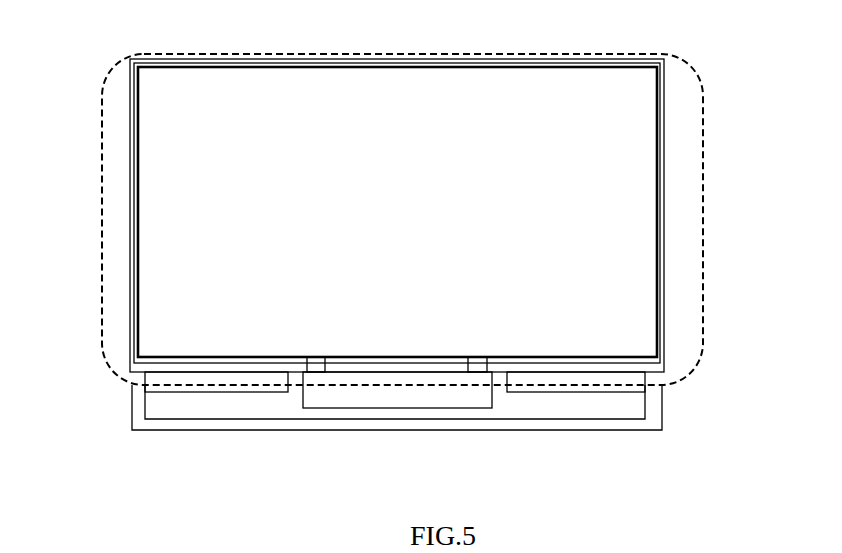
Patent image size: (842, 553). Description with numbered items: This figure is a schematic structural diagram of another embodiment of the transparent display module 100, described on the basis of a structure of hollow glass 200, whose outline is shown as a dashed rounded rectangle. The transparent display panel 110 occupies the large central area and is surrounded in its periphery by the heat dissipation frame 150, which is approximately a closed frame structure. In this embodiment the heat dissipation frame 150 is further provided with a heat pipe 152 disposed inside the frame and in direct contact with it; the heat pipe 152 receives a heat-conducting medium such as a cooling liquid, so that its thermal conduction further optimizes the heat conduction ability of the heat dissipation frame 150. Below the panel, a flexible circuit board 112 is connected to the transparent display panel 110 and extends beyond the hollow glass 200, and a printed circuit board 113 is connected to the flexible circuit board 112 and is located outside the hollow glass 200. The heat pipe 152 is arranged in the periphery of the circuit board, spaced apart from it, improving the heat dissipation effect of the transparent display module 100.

The transparent display module 100 is at (121, 98).
The transparent display panel 110 is at (610, 88).
The flexible circuit board 112 is at (479, 364).
The printed circuit board 113 is at (444, 397).
The heat dissipation frame 150 is at (656, 412).
The heat pipe 152 is at (667, 316).
The hollow glass 200 is at (704, 192).